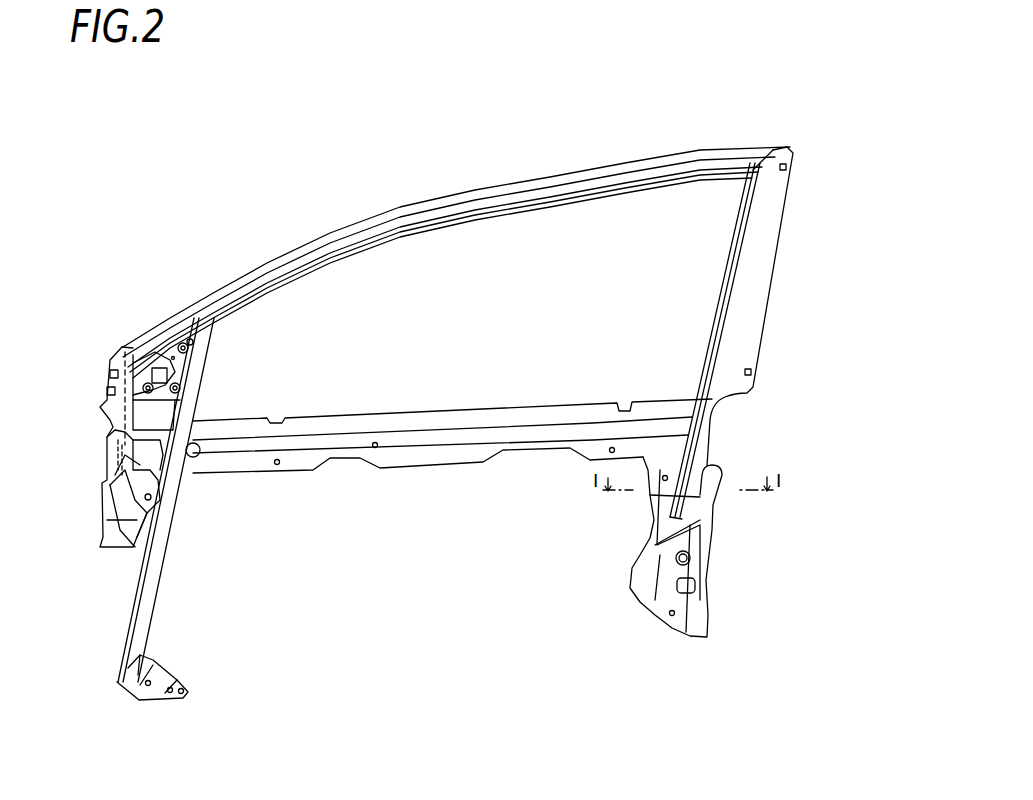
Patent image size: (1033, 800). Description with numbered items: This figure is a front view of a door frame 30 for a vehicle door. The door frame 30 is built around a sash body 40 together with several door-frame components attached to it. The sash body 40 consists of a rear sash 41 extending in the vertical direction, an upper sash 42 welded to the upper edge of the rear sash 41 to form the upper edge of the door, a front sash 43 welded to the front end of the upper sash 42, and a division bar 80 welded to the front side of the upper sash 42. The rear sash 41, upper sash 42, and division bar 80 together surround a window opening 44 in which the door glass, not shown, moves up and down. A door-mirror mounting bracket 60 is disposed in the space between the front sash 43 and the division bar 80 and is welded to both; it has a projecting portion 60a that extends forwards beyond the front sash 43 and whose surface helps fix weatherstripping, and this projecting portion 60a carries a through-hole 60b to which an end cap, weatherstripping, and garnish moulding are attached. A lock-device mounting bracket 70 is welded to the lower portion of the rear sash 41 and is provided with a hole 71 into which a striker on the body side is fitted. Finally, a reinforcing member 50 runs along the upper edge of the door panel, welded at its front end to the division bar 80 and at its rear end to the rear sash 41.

The door frame 30 is at (568, 135).
The sash body 40 is at (457, 178).
The rear sash 41 is at (767, 267).
The upper sash 42 is at (605, 165).
The front sash 43 is at (107, 448).
The window opening 44 is at (377, 404).
The reinforcing member 50 is at (410, 460).
The door-mirror mounting bracket 60 is at (162, 370).
The projecting portion 60a is at (122, 357).
The through-hole 60b is at (110, 373).
The lock-device mounting bracket 70 is at (687, 613).
The hole 71 is at (692, 588).
The division bar 80 is at (157, 553).